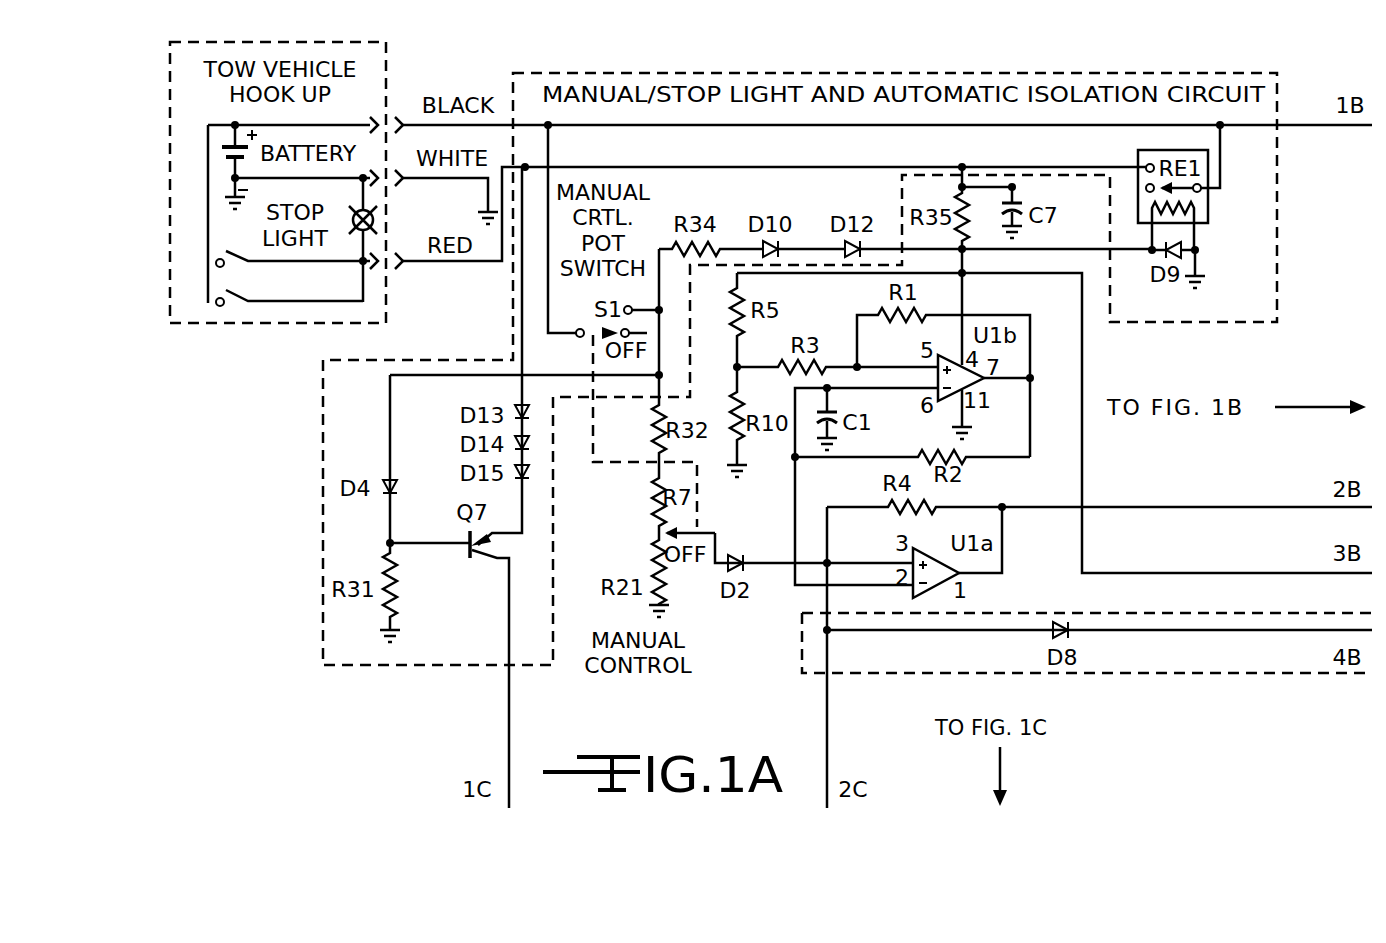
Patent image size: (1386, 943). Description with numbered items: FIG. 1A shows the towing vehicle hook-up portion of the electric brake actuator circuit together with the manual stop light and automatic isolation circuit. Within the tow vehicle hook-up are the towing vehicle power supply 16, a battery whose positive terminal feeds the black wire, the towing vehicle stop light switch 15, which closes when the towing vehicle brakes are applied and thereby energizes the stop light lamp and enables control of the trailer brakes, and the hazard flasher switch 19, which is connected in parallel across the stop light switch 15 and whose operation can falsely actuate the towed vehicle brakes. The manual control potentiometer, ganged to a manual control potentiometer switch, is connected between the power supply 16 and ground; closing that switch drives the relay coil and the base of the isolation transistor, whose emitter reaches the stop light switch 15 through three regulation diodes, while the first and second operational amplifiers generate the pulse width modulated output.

The towing vehicle power supply 16 is at (205, 148).
The towing vehicle stop light switch 15 is at (205, 226).
The hazard flasher switch 19 is at (205, 300).